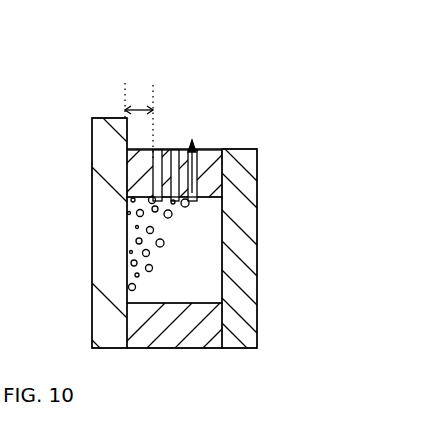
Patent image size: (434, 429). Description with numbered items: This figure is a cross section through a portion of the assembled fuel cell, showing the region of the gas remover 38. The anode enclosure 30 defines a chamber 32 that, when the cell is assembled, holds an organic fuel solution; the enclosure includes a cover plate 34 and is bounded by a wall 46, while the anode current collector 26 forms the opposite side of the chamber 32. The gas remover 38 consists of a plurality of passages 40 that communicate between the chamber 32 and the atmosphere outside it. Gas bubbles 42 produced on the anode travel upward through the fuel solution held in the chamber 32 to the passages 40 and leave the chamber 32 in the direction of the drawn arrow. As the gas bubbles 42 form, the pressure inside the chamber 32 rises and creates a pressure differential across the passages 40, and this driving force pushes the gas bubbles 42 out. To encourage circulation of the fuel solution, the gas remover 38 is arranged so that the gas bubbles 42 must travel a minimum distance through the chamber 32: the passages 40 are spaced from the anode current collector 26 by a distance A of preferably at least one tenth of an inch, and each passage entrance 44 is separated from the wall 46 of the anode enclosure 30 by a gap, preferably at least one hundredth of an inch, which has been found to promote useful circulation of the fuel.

The anode current collector 26 is at (110, 317).
The anode enclosure 30 is at (147, 338).
The chamber 32 is at (212, 285).
The cover plate 34 is at (245, 276).
The gas remover 38 is at (198, 103).
The passages 40 is at (167, 150).
The gas bubbles 42 is at (137, 225).
The passage entrance 44 is at (192, 200).
The wall 46 is at (212, 193).
The distance A is at (135, 108).